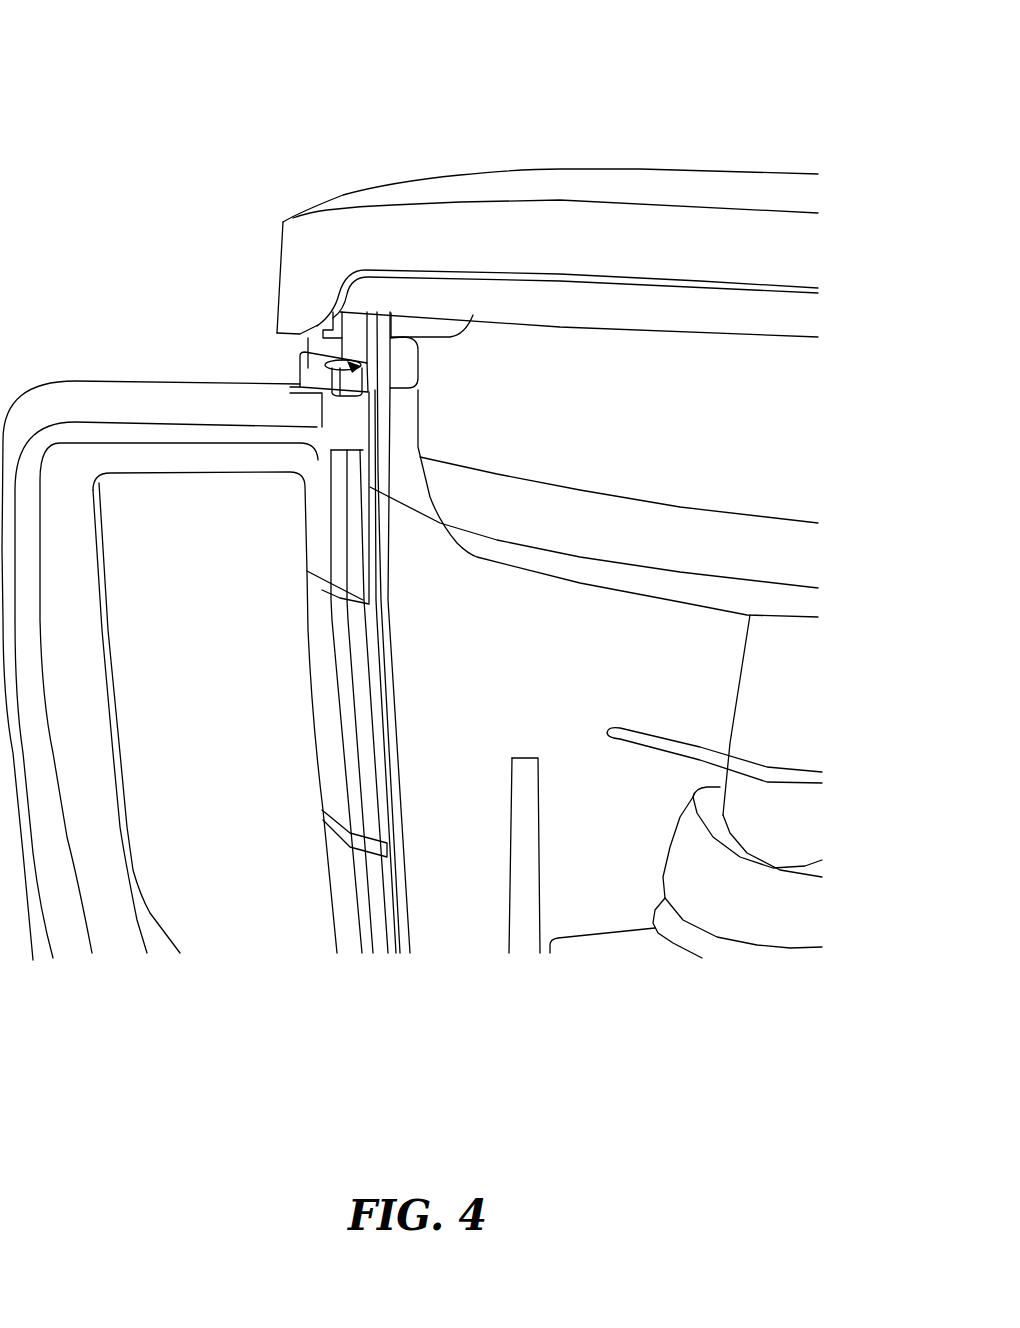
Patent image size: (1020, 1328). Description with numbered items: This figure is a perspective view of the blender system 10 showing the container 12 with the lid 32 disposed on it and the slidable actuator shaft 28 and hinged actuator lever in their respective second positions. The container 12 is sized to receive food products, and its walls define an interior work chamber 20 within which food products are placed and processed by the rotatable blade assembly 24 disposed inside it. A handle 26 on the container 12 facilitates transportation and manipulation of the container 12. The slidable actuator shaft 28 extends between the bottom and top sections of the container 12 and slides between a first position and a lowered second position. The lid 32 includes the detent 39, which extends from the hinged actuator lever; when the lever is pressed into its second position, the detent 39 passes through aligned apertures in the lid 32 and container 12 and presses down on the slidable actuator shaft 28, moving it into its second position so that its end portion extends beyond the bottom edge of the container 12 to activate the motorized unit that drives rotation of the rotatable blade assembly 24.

The blender system 10 is at (97, 73).
The container 12 is at (266, 696).
The work chamber 20 is at (702, 669).
The rotatable blade assembly 24 is at (599, 704).
The handle 26 is at (70, 393).
The slidable actuator shaft 28 is at (300, 387).
The lid 32 is at (367, 160).
The detent 39 is at (353, 347).